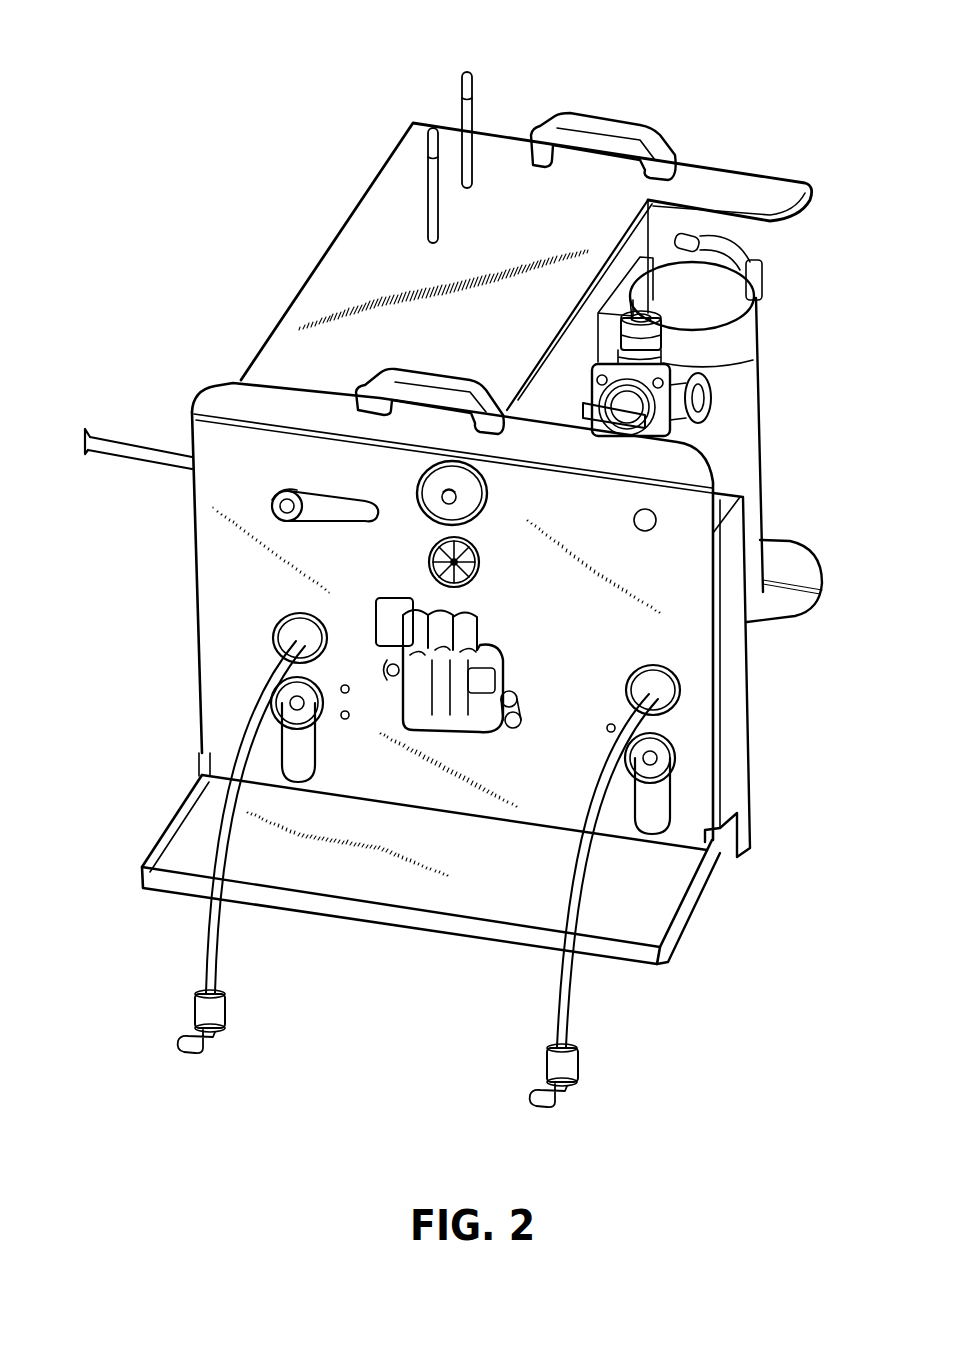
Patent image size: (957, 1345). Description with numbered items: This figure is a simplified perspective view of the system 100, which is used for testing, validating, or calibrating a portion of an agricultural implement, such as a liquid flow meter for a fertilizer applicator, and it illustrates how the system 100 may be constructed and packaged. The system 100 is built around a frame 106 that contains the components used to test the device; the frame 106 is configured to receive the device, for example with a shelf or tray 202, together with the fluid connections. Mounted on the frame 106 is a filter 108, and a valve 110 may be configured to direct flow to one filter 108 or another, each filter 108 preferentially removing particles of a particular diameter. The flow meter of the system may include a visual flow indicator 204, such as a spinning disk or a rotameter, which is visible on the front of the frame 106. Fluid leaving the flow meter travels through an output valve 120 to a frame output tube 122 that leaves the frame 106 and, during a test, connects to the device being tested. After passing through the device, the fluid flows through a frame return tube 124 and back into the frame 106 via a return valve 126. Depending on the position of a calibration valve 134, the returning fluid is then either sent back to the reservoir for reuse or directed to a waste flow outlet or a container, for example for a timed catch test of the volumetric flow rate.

The system 100 is at (778, 72).
The frame 106 is at (335, 270).
The filter 108 is at (742, 470).
The valve 110 is at (693, 363).
The output valve 120 is at (673, 772).
The frame output tube 122 is at (563, 1023).
The frame return tube 124 is at (210, 932).
The return valve 126 is at (280, 712).
The calibration valve 134 is at (270, 500).
The shelf or tray 202 is at (450, 885).
The visual flow indicator 204 is at (427, 558).